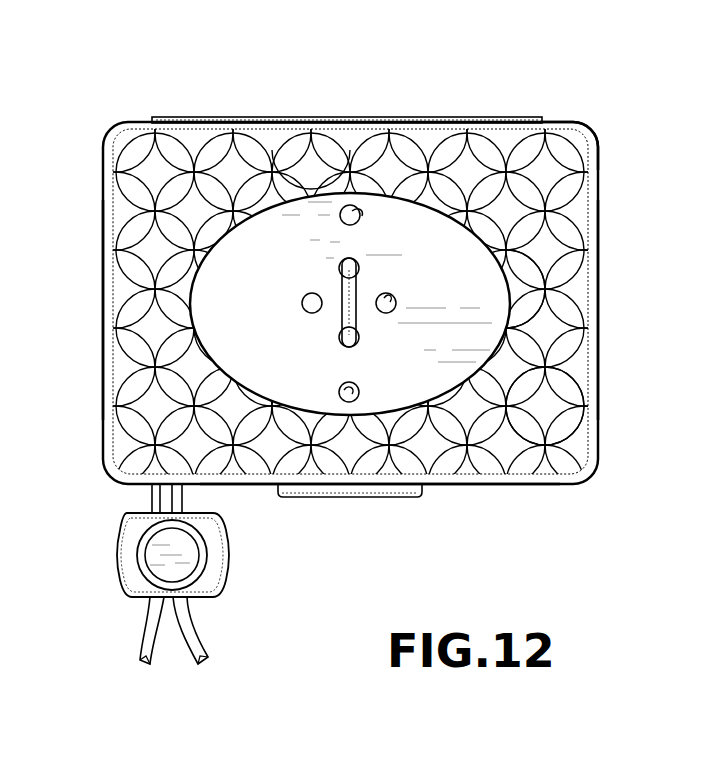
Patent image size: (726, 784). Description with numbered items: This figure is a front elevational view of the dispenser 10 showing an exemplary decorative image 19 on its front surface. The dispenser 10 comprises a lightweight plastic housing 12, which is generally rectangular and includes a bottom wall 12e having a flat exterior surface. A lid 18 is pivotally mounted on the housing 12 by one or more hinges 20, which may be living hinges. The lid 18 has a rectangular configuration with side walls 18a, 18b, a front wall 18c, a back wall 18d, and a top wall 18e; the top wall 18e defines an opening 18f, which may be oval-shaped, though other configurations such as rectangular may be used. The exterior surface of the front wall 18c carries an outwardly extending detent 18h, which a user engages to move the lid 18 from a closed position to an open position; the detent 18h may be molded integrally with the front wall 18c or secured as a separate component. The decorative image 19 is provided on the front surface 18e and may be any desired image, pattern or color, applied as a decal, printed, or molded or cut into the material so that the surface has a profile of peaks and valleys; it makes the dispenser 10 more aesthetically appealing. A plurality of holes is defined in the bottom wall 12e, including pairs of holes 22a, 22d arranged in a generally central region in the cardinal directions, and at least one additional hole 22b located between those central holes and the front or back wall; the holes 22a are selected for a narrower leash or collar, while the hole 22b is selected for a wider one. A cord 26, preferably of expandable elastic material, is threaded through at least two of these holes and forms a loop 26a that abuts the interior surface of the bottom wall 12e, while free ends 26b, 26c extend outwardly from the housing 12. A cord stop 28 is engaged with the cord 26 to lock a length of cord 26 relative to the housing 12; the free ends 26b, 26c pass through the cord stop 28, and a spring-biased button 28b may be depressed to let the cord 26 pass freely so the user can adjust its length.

The dispenser 10 is at (246, 92).
The housing 12 is at (468, 272).
The bottom wall 12e is at (216, 338).
The lid 18 is at (162, 252).
The side wall 18a is at (103, 360).
The side wall 18b is at (600, 358).
The front wall 18c is at (538, 486).
The back wall 18d is at (552, 121).
The top wall 18e is at (548, 412).
The opening 18f is at (508, 287).
The detent 18h is at (407, 499).
The decorative image 19 is at (338, 142).
The hinge 20 is at (454, 117).
The holes 22a is at (340, 269).
The hole 22b is at (345, 390).
The holes 22d is at (308, 294).
The cord 26 is at (241, 446).
The loop 26a is at (345, 322).
The free end 26b is at (202, 660).
The free end 26c is at (146, 653).
The cord stop 28 is at (169, 554).
The button 28b is at (152, 566).